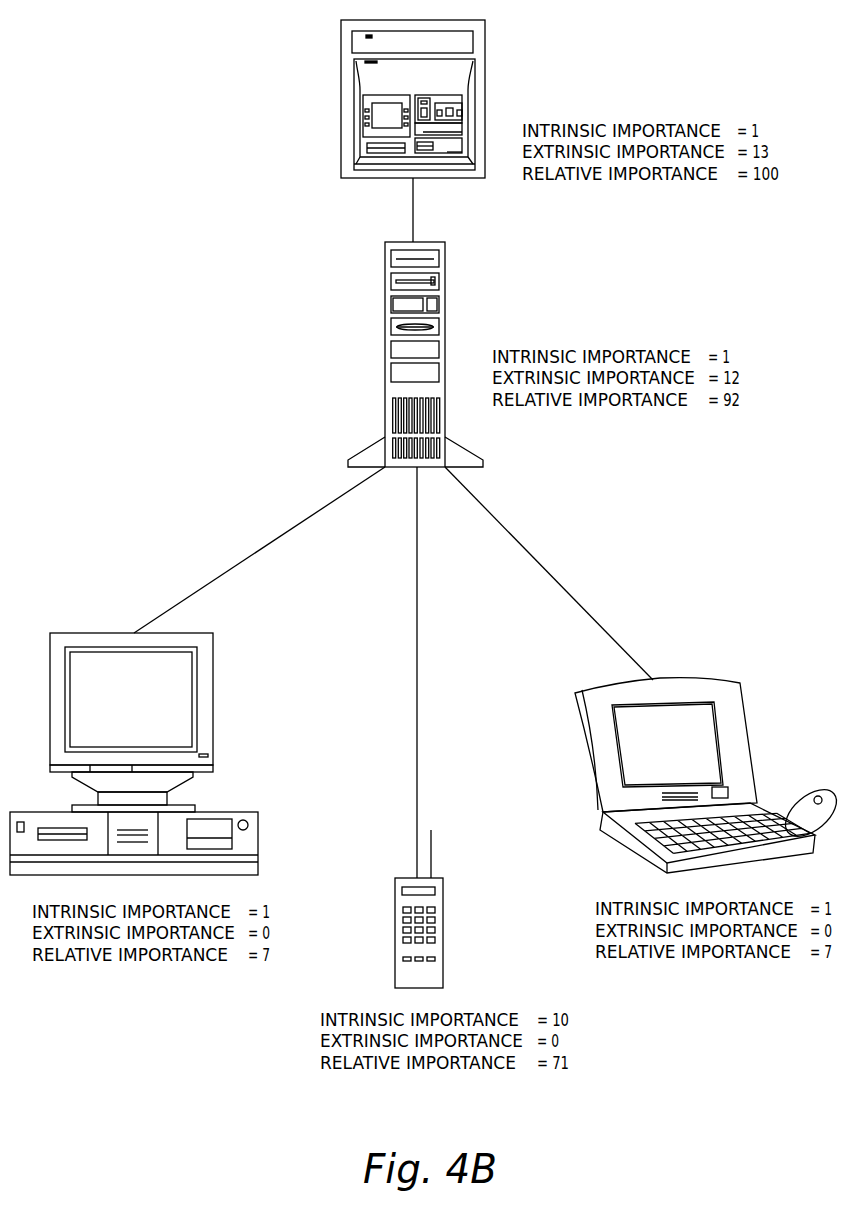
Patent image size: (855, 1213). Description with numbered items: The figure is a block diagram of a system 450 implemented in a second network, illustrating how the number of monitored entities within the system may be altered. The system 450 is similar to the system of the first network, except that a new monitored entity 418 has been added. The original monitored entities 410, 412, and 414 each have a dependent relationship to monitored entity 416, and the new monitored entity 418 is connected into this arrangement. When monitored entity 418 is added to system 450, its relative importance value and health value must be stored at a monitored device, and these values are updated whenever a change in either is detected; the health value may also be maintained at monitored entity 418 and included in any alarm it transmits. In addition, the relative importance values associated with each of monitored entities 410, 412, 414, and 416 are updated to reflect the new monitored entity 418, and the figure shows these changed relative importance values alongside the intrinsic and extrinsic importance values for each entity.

The monitored entity 410 is at (213, 652).
The monitored entity 412 is at (393, 885).
The monitored entity 414 is at (573, 700).
The monitored entity 416 is at (446, 272).
The monitored entity 418 is at (340, 47).
The system 450 is at (217, 309).